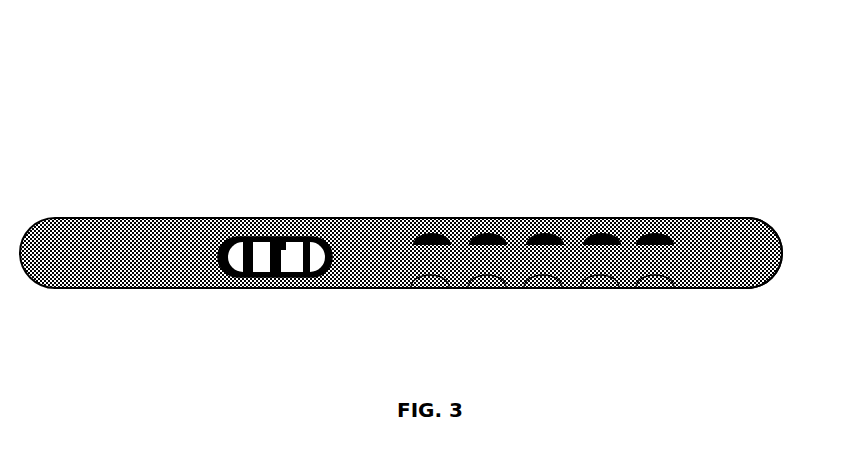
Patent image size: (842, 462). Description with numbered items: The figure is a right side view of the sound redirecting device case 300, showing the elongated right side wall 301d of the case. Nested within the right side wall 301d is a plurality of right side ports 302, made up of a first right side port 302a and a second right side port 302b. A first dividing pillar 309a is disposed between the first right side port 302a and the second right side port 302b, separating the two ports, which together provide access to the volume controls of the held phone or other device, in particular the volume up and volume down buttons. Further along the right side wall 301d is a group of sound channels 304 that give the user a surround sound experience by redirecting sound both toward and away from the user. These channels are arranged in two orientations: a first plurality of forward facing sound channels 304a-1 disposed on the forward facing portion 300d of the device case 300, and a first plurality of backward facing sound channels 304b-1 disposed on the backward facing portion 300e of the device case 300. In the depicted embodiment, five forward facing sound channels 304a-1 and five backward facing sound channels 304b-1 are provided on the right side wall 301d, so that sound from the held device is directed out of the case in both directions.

The device case 300 is at (366, 172).
The backward facing portion 300e is at (727, 188).
The forward facing portion 300d is at (734, 318).
The right side wall 301d is at (97, 232).
The plurality of right side ports 302 is at (293, 271).
The first right side port 302a is at (242, 252).
The second right side port 302b is at (303, 264).
The first dividing pillar 309a is at (276, 270).
The sound channels 304 is at (543, 198).
The first plurality of backward facing sound channels 304b-1 is at (648, 229).
The first plurality of forward facing sound channels 304a-1 is at (440, 282).